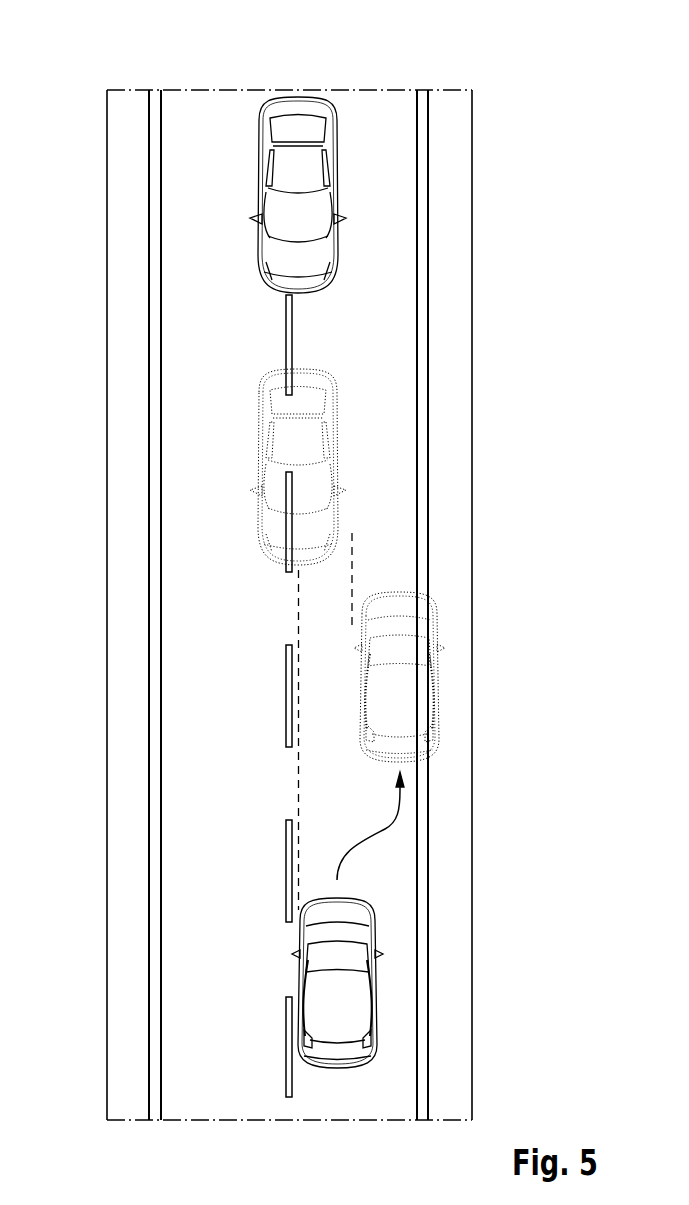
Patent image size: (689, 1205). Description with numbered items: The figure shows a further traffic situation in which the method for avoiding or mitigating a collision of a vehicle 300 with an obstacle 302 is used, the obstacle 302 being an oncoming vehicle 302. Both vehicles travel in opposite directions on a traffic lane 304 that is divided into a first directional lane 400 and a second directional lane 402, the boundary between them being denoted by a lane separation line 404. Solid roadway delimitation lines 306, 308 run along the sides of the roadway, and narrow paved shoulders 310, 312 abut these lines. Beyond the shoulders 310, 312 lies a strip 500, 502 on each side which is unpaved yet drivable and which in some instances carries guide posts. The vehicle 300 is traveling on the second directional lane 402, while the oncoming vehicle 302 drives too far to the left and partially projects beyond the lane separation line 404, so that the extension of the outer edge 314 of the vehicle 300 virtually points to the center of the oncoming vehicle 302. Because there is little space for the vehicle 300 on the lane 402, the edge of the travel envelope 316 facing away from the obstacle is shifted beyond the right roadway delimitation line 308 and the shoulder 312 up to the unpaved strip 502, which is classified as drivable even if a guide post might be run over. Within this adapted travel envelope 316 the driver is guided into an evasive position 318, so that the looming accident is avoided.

The vehicle 300 is at (380, 972).
The obstacle 302 is at (286, 108).
The traffic lane 304 is at (341, 68).
The roadway delimitation line 306 is at (160, 1100).
The roadway delimitation line 308 is at (413, 1100).
The shoulder 310 is at (150, 176).
The shoulder 312 is at (428, 177).
The extension of outer edge 314 is at (298, 771).
The travel envelope 316 is at (400, 823).
The evasive position 318 is at (437, 668).
The first directional lane 400 is at (177, 447).
The second directional lane 402 is at (400, 447).
The lane separation line 404 is at (288, 1097).
The strip 500 is at (133, 302).
The strip 502 is at (443, 300).